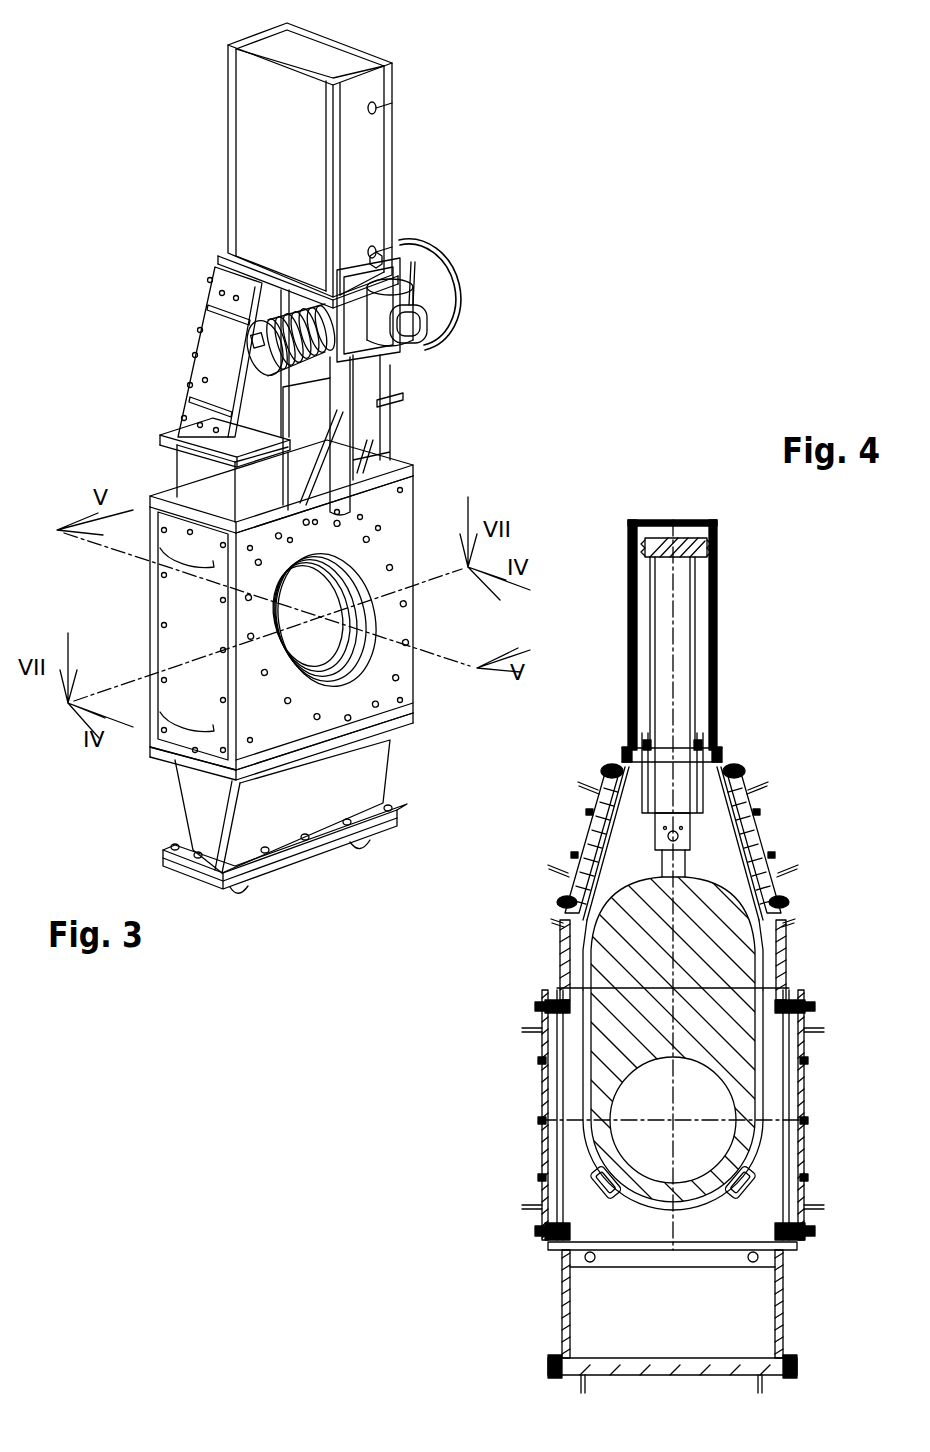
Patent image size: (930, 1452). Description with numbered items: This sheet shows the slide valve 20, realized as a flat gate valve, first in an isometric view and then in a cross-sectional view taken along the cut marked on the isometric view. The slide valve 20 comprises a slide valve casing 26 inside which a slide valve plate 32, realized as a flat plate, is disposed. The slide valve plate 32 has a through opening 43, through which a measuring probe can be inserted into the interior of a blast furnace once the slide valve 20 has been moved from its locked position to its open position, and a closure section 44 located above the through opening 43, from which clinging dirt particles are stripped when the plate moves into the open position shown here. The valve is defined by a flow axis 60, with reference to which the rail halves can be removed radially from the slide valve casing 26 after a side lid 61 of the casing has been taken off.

In FIG. 4, the slide valve 20 is at (763, 762).
In FIG. 4, the closure section 44 is at (737, 927).
In FIG. 4, the slide valve plate 32 is at (778, 1008).
In FIG. 4, the through opening 43 is at (715, 1105).
In FIG. 4, the slide valve casing 26 is at (535, 1012).
In FIG. 3, the side lid 61 is at (175, 605).
In FIG. 4, the side lid 61 is at (540, 1140).
In FIG. 3, the flow axis 60 is at (445, 660).